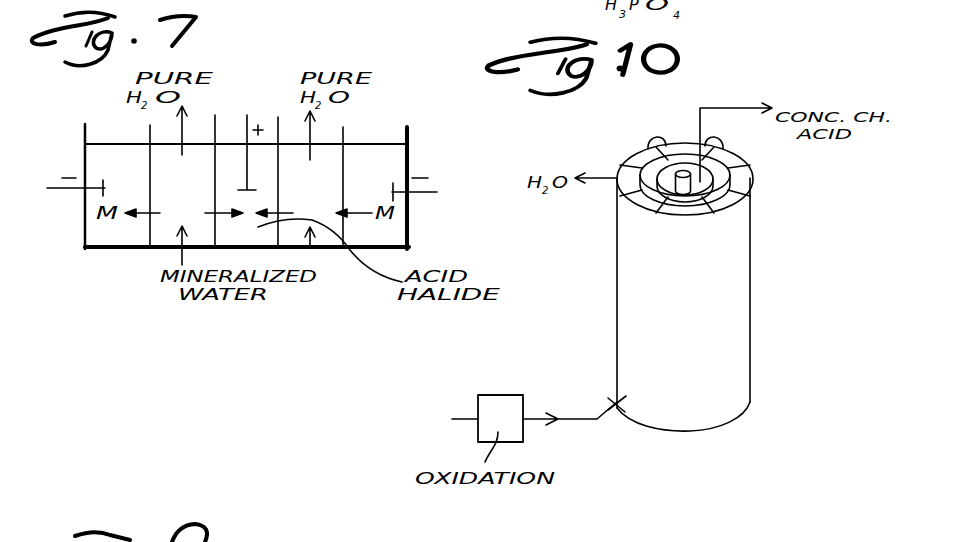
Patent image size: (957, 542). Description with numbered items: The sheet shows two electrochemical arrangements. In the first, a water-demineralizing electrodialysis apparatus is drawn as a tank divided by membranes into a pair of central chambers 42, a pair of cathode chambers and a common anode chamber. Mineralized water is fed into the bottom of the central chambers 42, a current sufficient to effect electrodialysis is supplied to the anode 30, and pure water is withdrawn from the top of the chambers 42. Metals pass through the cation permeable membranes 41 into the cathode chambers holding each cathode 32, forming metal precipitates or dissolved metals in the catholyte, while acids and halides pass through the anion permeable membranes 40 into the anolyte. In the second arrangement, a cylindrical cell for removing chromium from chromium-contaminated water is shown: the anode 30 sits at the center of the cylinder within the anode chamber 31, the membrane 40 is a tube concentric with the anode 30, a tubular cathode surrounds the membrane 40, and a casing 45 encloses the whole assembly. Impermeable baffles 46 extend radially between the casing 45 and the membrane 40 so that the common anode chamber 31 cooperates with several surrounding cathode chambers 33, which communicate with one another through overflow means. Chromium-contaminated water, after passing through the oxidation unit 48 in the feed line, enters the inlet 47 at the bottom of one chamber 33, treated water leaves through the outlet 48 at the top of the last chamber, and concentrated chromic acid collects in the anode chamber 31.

In FIG. 7, the anode 30 is at (247, 117).
In FIG. 10, the anode 30 is at (725, 196).
In FIG. 10, the anode chamber 31 is at (683, 165).
In FIG. 7, the cathode 32 is at (67, 193).
In FIG. 10, the cathode 32 is at (638, 172).
In FIG. 10, the cathode chamber 33 is at (696, 218).
In FIG. 7, the anion permeable membrane 40 is at (238, 118).
In FIG. 10, the anion permeable membrane 40 is at (718, 210).
In FIG. 7, the cation permeable membrane 41 is at (150, 133).
In FIG. 7, the central chamber 42 is at (167, 240).
In FIG. 10, the casing 45 is at (692, 346).
In FIG. 10, the baffle 46 is at (630, 190).
In FIG. 10, the inlet 47 is at (617, 405).
In FIG. 10, the outlet / oxidation unit 48 is at (506, 396).